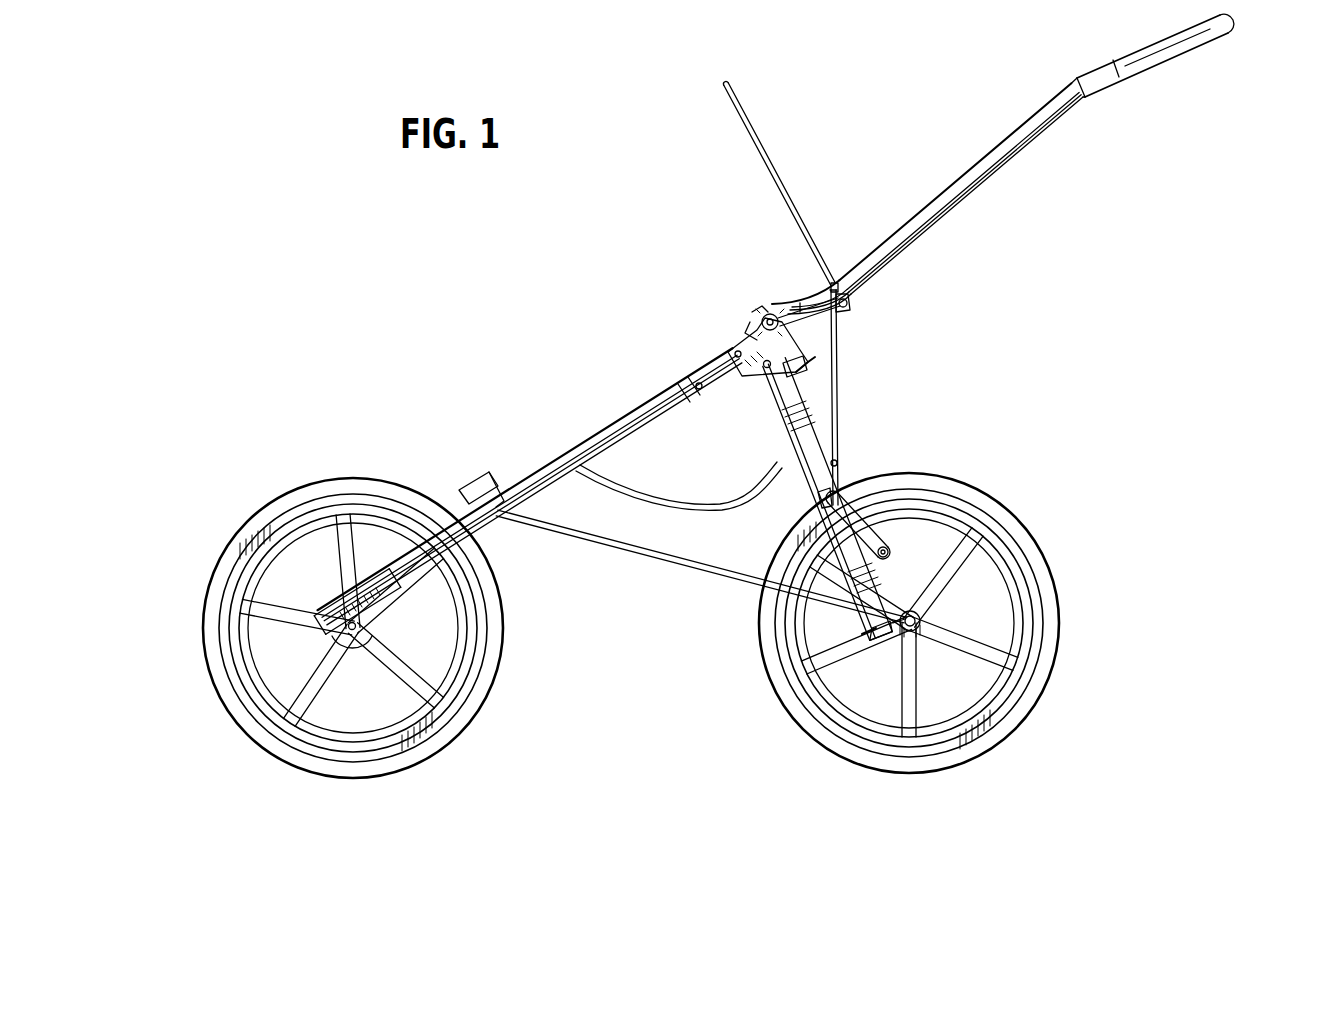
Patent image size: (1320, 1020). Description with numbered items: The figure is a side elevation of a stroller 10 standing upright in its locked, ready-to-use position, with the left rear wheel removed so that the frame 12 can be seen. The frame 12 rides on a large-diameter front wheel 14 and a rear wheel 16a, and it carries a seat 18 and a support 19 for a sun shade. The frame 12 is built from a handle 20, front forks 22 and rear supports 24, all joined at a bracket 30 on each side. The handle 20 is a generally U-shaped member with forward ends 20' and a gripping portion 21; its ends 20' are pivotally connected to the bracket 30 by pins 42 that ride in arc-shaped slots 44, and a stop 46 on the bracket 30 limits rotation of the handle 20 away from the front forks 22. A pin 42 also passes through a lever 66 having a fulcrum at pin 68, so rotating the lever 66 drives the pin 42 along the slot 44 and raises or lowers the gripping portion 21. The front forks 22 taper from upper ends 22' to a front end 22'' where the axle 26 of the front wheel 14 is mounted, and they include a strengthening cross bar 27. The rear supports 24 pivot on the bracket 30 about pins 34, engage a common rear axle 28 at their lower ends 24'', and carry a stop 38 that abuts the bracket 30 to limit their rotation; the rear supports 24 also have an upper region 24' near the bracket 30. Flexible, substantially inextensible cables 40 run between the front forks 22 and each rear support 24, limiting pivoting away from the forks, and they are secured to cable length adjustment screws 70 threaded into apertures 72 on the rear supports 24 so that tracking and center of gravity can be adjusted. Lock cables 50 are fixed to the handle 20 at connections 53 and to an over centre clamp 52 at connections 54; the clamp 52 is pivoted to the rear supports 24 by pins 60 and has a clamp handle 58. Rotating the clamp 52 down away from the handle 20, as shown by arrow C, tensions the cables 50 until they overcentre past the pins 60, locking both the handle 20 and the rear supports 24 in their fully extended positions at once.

The stroller 10 is at (614, 410).
The frame 12 is at (962, 160).
The front wheel 14 is at (302, 505).
The rear wheel 16a is at (1060, 606).
The seat 18 is at (655, 500).
The support for a sun shade 19 is at (740, 86).
The handle 20 is at (939, 198).
The forward ends of handle 20' is at (810, 227).
The gripping portion 21 is at (1232, 28).
The front forks 22 is at (530, 486).
The upper ends of front forks 22' is at (657, 359).
The front end of front forks 22'' is at (279, 595).
The rear supports 24 is at (779, 516).
The rear frame member upper end 24' is at (759, 412).
The lower ends of rear supports 24'' is at (872, 665).
The axle of the front wheel 26 is at (364, 624).
The strengthening cross bar 27 is at (474, 498).
The common rear axle 28 is at (916, 632).
The bracket 30 is at (735, 352).
The pins 34 is at (765, 368).
The stop 38 is at (818, 358).
The cables 40 is at (685, 570).
The pins 42 is at (765, 315).
The slots 44 is at (805, 333).
The stops 46 is at (855, 303).
The lock cables 50 is at (842, 400).
The over centre clamp 52 is at (880, 527).
The connections 53 is at (842, 298).
The connections 54 is at (820, 500).
The handle of clamp 58 is at (890, 558).
The pins 60 is at (872, 460).
The lever 66 is at (764, 306).
The fulcrum pin 68 is at (754, 334).
The cable length adjustment screws 70 is at (862, 632).
The threaded apertures 72 is at (903, 617).
The arrow C is at (836, 445).